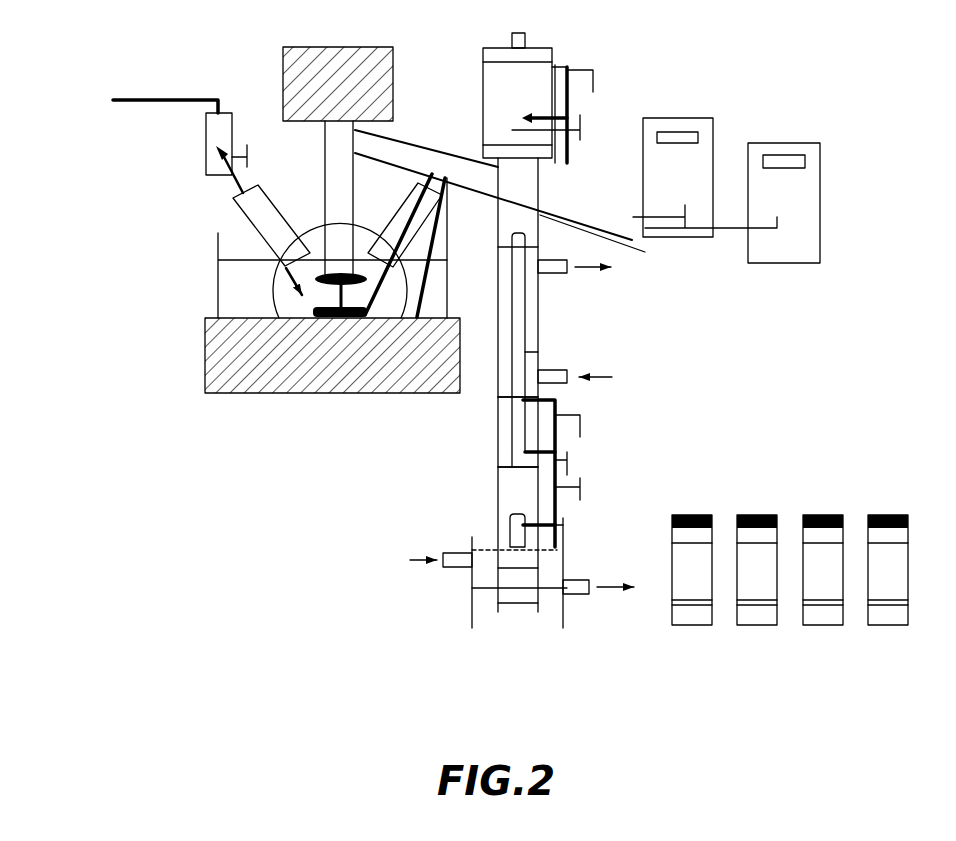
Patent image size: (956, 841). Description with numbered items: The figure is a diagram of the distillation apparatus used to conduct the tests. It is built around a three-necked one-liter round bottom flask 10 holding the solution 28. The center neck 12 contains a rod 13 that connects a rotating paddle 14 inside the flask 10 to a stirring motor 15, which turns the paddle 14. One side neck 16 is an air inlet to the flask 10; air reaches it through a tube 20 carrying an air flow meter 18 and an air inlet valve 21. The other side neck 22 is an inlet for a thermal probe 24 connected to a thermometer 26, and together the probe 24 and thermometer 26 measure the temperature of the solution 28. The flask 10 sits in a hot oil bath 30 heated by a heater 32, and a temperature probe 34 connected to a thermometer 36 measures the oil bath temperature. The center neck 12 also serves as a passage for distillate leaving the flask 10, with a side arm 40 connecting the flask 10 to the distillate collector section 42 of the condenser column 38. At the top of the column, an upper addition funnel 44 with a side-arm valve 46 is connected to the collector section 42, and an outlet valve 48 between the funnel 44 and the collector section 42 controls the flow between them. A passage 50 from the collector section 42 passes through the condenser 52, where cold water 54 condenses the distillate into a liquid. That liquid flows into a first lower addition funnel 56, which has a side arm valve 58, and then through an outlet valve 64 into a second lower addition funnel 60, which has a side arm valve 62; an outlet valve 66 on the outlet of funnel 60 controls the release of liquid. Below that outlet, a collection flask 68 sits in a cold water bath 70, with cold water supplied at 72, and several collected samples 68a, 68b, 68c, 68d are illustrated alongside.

The round bottom flask 10 is at (274, 290).
The center neck 12 is at (325, 178).
The rod 13 is at (372, 290).
The rotating paddle 14 is at (370, 313).
The stirring motor 15 is at (278, 75).
The side neck 16 is at (244, 212).
The air flow meter 18 is at (199, 148).
The tube 20 is at (124, 100).
The air inlet valve 21 is at (247, 150).
The side neck 22 is at (397, 211).
The thermal probe 24 is at (428, 176).
The thermometer 26 is at (713, 127).
The solution 28 is at (288, 261).
The hot oil bath 30 is at (229, 300).
The heater 32 is at (181, 376).
The temperature probe 34 is at (447, 250).
The thermometer 36 is at (802, 143).
The condenser column 38 is at (545, 327).
The side arm 40 is at (420, 146).
The distillate collector section 42 is at (538, 197).
The upper addition funnel 44 is at (541, 109).
The side-arm valve 46 is at (593, 92).
The outlet valve 48 is at (580, 127).
The passage 50 is at (526, 352).
The condenser 52 is at (538, 302).
The cold water 54 is at (589, 378).
The first lower addition funnel 56 is at (488, 458).
The side arm valve 58 is at (580, 425).
The second lower addition funnel 60 is at (480, 515).
The side arm valve 62 is at (580, 490).
The outlet valve 64 is at (567, 460).
The outlet valve 66 is at (563, 525).
The flask 68 is at (489, 576).
The collected sample 68a is at (700, 626).
The collected sample 68b is at (765, 626).
The collected sample 68c is at (831, 626).
The collected sample 68d is at (896, 626).
The cold water bath 70 is at (472, 614).
The cold water supply 72 is at (423, 561).